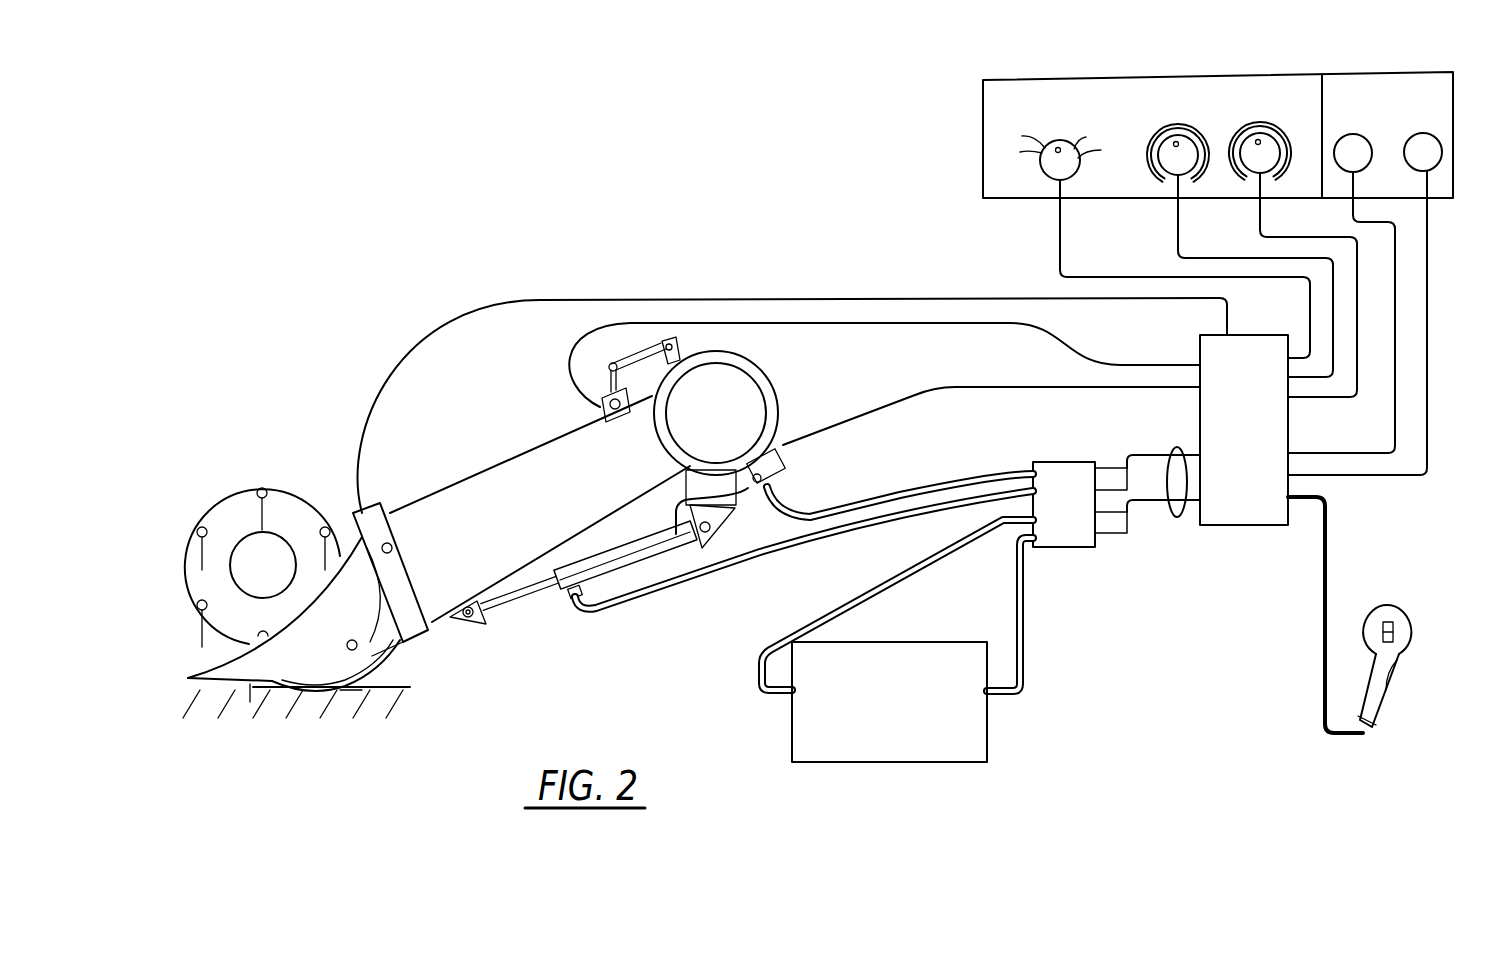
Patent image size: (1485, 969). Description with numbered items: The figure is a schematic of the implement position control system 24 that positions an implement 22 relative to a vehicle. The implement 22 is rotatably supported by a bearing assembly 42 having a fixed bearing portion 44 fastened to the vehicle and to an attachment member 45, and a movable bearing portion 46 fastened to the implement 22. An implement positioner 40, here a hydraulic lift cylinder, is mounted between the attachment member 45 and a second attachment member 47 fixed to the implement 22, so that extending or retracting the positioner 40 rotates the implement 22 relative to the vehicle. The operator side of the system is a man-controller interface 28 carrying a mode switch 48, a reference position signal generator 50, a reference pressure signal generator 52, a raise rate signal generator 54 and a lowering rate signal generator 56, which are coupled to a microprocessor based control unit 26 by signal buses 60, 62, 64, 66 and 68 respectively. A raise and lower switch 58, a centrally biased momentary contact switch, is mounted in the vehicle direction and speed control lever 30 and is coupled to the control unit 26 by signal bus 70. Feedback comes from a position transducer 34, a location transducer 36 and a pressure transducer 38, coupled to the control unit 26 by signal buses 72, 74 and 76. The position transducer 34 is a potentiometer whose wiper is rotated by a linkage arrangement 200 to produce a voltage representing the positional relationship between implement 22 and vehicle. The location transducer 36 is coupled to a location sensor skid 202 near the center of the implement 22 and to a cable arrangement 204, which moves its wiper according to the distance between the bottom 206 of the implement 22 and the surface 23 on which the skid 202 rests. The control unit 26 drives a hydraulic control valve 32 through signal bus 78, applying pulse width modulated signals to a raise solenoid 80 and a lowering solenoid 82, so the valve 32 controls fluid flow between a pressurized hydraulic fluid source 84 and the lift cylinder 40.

The man-controller interface 28 is at (998, 79).
The mode switch 48 is at (1048, 182).
The reference position signal generator 50 is at (1173, 180).
The reference pressure signal generator 52 is at (1250, 180).
The raise rate signal generator 54 is at (1347, 193).
The lowering rate signal generator 56 is at (1416, 192).
The signal bus 60 is at (1120, 276).
The signal bus 62 is at (1228, 257).
The signal bus 64 is at (1340, 402).
The signal bus 66 is at (1325, 454).
The signal bus 68 is at (1372, 478).
The signal bus 74 is at (985, 275).
The signal bus 72 is at (1086, 337).
The signal bus 76 is at (1058, 385).
The control unit 26 is at (1253, 527).
The signal bus 70 is at (1328, 579).
The vehicle direction and speed control lever 30 is at (1407, 656).
The raise and lower switch 58 is at (1394, 628).
The hydraulic control valve 32 is at (1041, 462).
The raise solenoid 80 is at (1106, 468).
The lowering solenoid 82 is at (1110, 534).
The signal bus 78 is at (1177, 517).
The implement position control system 24 is at (1050, 610).
The pressurized hydraulic fluid source 84 is at (926, 642).
The implement positioner 40 is at (652, 536).
The second attachment member 47 is at (488, 622).
The attachment member 45 is at (725, 518).
The location transducer 36 is at (405, 547).
The movable bearing portion 46 is at (750, 403).
The bearing assembly 42 is at (728, 372).
The fixed bearing portion 44 is at (768, 397).
The pressure transducer 38 is at (786, 440).
The position transducer 34 is at (596, 414).
The linkage arrangement 200 is at (641, 352).
The implement 22 is at (412, 641).
The cable arrangement 204 is at (374, 658).
The surface 23 is at (220, 697).
The bottom 206 is at (250, 703).
The location sensor skid 202 is at (365, 692).